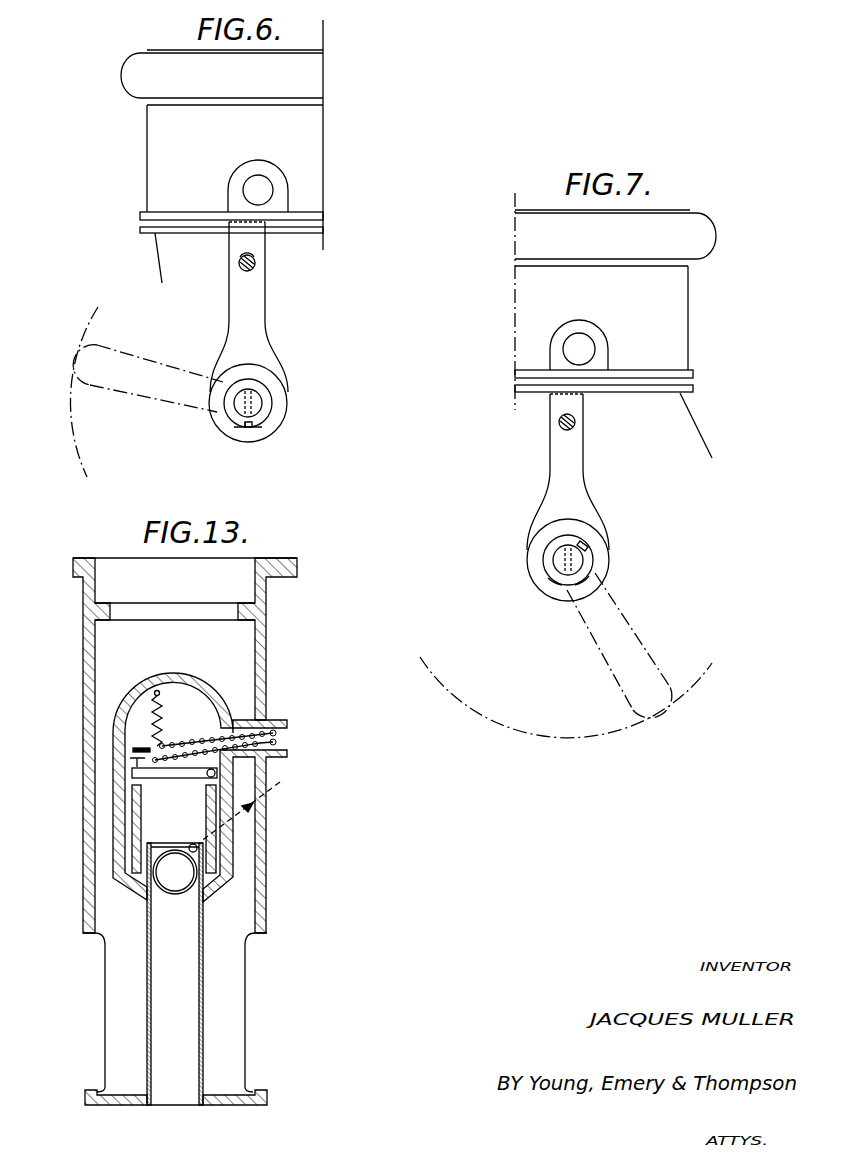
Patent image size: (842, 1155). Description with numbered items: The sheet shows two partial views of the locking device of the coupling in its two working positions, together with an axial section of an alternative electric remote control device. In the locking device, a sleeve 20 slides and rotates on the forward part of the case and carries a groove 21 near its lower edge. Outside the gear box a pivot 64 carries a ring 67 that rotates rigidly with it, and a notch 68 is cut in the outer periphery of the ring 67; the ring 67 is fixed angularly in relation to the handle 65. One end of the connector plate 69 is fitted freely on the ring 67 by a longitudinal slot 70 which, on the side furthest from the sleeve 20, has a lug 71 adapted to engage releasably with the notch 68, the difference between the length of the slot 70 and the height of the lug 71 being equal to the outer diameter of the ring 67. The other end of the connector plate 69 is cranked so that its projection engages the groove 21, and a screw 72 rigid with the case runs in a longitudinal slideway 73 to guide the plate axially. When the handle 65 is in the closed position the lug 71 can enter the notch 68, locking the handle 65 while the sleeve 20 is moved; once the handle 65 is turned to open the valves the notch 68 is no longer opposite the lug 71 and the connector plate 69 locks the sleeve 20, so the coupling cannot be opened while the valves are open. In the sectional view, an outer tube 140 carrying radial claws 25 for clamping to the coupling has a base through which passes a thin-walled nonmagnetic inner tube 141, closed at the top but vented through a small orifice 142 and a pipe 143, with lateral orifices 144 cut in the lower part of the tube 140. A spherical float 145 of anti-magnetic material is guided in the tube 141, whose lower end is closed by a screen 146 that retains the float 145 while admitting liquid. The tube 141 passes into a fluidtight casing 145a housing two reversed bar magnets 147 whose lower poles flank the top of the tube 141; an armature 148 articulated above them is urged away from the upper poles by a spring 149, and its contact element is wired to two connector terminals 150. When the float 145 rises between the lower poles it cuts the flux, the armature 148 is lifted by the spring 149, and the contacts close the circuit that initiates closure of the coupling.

In FIG. 6, the sleeve 20 is at (165, 165).
In FIG. 6, the groove 21 is at (293, 218).
In FIG. 6, the pivot 64 is at (256, 412).
In FIG. 6, the handle 65 is at (96, 348).
In FIG. 6, the ring 67 is at (262, 392).
In FIG. 6, the notch 68 is at (234, 427).
In FIG. 7, the notch 68 is at (590, 545).
In FIG. 6, the connector plate 69 is at (258, 322).
In FIG. 6, the longitudinal slot 70 is at (265, 375).
In FIG. 6, the lug 71 is at (250, 430).
In FIG. 6, the screw 72 is at (256, 263).
In FIG. 6, the longitudinal slideway 73 is at (241, 258).
In FIG. 13, the radial claws 25 is at (275, 566).
In FIG. 13, the outer tube 140 is at (88, 648).
In FIG. 13, the inner tube 141 is at (205, 1048).
In FIG. 13, the small orifice 142 is at (194, 843).
In FIG. 13, the pipe 143 is at (258, 803).
In FIG. 13, the lateral orifices 144 is at (104, 1000).
In FIG. 13, the spherical float 145 is at (173, 876).
In FIG. 13, the fluidtight casing 145a is at (113, 786).
In FIG. 13, the screen 146 is at (183, 1105).
In FIG. 13, the bar magnets 147 is at (136, 818).
In FIG. 13, the armature 148 is at (140, 774).
In FIG. 13, the spring 149 is at (161, 713).
In FIG. 13, the connector terminals 150 is at (289, 742).